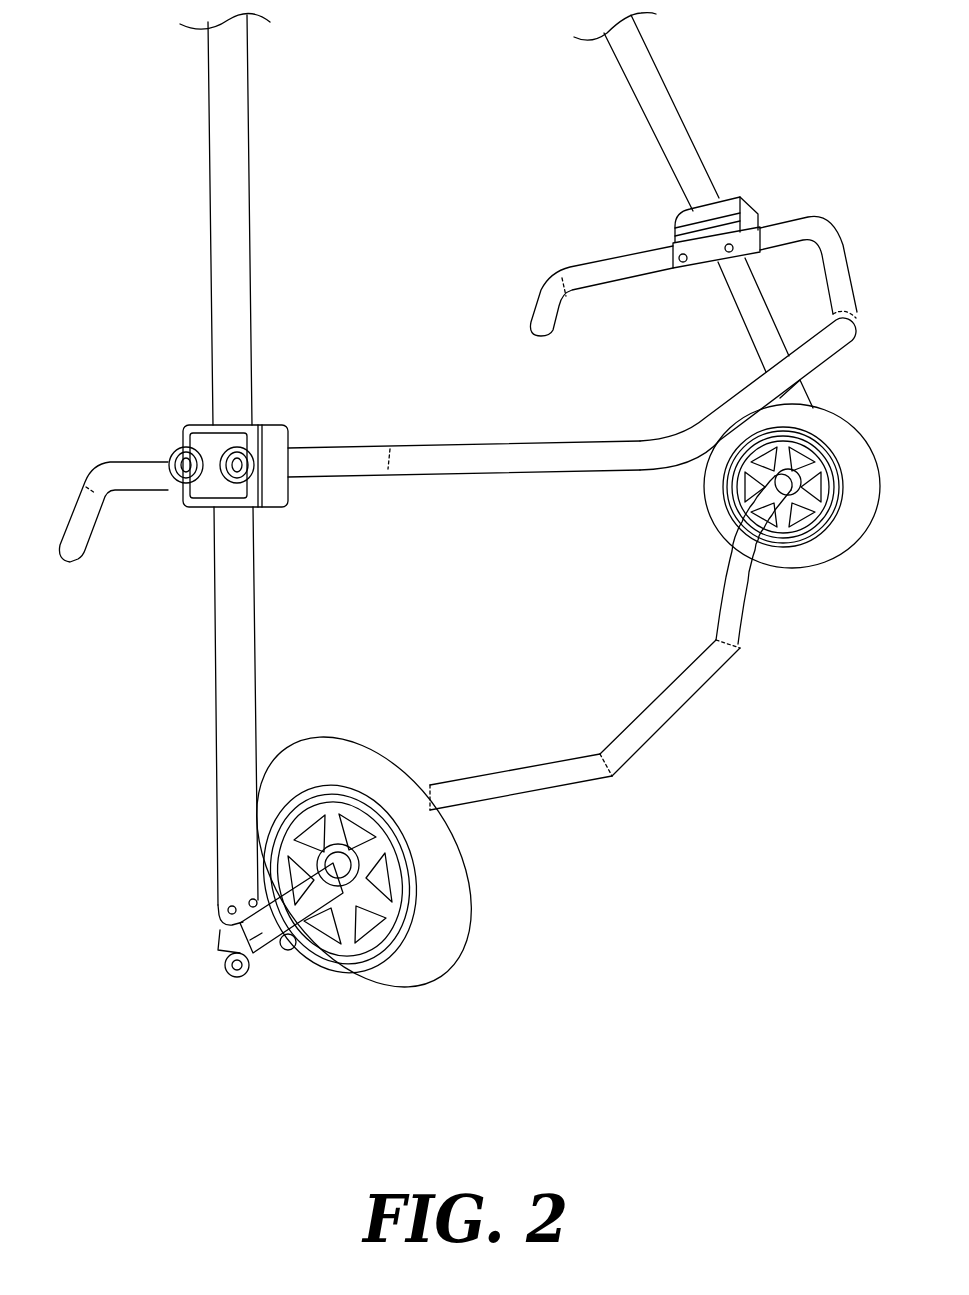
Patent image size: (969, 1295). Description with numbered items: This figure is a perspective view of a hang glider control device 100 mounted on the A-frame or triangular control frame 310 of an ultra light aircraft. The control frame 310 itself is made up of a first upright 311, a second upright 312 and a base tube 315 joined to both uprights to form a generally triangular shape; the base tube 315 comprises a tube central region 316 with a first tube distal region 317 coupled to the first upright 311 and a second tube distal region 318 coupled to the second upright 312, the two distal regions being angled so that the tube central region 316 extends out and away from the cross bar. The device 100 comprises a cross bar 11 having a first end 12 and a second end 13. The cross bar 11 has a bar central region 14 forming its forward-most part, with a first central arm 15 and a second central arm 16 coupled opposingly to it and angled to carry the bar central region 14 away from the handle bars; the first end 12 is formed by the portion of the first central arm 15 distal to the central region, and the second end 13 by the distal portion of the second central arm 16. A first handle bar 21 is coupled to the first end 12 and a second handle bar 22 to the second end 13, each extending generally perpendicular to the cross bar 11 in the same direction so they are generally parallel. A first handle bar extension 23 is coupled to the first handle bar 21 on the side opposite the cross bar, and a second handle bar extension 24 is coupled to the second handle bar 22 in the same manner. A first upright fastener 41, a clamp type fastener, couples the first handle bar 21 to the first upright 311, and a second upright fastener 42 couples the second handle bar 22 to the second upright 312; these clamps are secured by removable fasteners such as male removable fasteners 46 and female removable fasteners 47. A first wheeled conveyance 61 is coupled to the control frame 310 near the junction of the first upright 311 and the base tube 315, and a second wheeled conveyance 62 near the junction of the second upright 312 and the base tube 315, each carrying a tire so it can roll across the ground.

The hang glider control device 100 is at (103, 108).
The cross bar 11 is at (678, 399).
The first end 12 is at (572, 434).
The second end 13 is at (688, 246).
The bar central region 14 is at (730, 413).
The first central arm 15 is at (522, 449).
The second central arm 16 is at (833, 277).
The first handle bar 21 is at (215, 476).
The second handle bar 22 is at (664, 248).
The first handle bar extension 23 is at (84, 517).
The second handle bar extension 24 is at (545, 303).
The first upright fastener 41 is at (230, 428).
The second upright fastener 42 is at (725, 214).
The male removable fastener 46 is at (725, 258).
The female removable fastener 47 is at (178, 452).
The first wheeled conveyance 61 is at (357, 777).
The second wheeled conveyance 62 is at (796, 543).
The control frame 310 is at (214, 1003).
The first upright 311 is at (236, 228).
The second upright 312 is at (646, 103).
The base tube 315 is at (611, 665).
The tube central region 316 is at (660, 713).
The first tube distal region 317 is at (507, 793).
The second tube distal region 318 is at (739, 598).